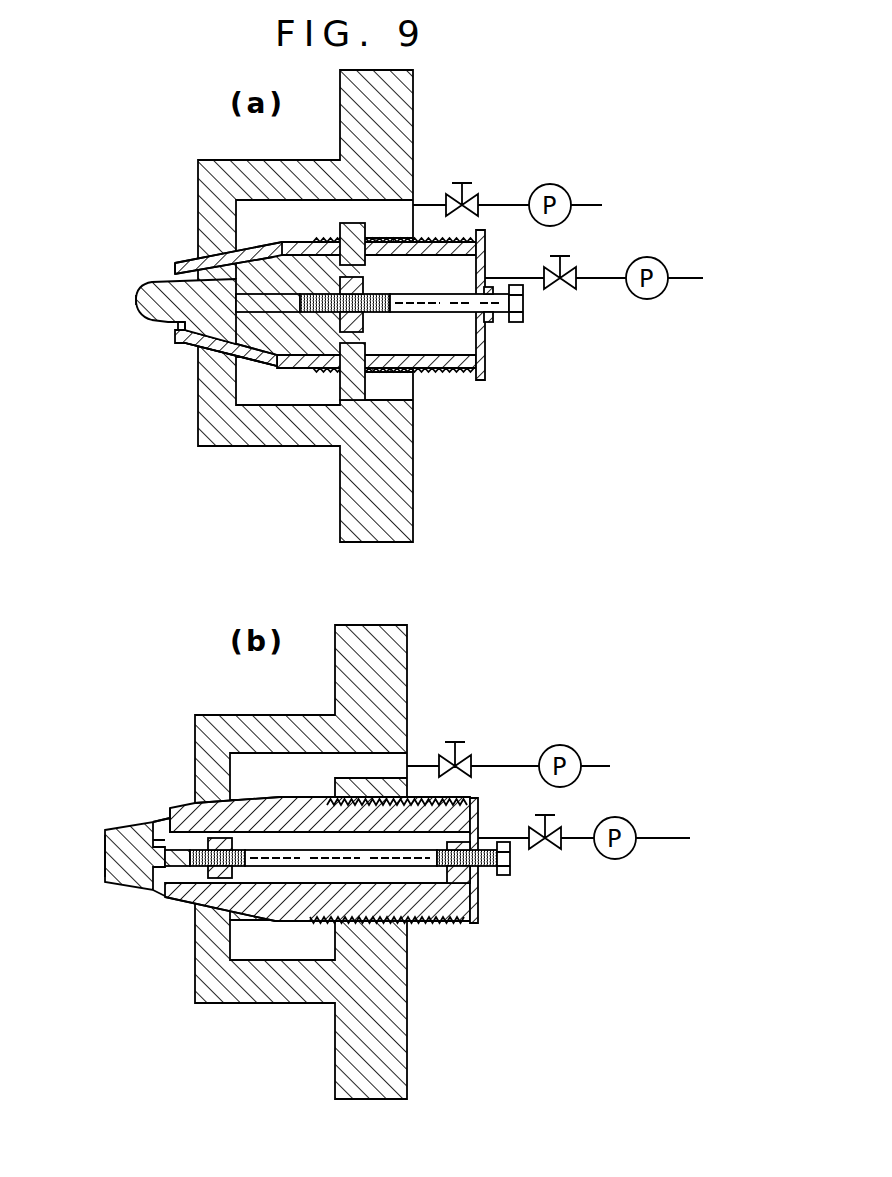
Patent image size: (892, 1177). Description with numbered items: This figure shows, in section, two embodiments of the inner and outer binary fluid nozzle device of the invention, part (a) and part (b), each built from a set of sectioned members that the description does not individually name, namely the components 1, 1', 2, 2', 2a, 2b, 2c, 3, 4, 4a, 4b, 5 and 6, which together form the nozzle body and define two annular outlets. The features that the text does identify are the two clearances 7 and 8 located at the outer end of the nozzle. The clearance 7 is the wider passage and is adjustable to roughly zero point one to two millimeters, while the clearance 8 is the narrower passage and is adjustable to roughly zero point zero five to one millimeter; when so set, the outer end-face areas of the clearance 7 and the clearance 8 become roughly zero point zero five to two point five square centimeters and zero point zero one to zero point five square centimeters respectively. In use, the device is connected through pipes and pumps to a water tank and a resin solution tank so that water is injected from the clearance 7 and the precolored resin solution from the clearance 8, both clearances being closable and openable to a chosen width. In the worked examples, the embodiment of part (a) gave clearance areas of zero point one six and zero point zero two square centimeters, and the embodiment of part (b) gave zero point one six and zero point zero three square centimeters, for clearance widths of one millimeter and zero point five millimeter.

The body 1 is at (290, 584).
The through bore of body 1' is at (219, 558).
The tubular member 2 is at (208, 569).
The flexible plate portion 2' is at (226, 523).
The lower plate portion 2a is at (178, 340).
The recess of tubular member 2b is at (165, 826).
The end face of tubular member 2c is at (177, 267).
The threaded holder 3 is at (393, 232).
The nozzle 4 is at (142, 307).
The groove of nozzle 4a is at (185, 322).
The gap 4b is at (153, 841).
The rod 5 is at (294, 298).
The nut 6 is at (343, 323).
The clearance 7 is at (200, 348).
The clearance 8 is at (176, 278).